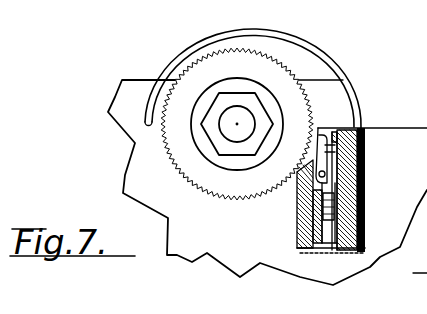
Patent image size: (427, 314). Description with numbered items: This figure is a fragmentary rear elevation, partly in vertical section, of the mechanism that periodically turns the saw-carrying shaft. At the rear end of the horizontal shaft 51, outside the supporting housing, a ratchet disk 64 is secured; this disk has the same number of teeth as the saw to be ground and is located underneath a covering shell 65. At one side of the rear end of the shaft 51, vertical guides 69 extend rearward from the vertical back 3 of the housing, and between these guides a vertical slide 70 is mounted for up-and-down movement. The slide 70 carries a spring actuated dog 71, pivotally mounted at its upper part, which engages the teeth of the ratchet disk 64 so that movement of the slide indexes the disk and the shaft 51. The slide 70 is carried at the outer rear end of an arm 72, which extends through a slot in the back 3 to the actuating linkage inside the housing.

The back 3 is at (132, 172).
The horizontal shaft 51 is at (237, 112).
The ratchet disk 64 is at (192, 168).
The covering shell 65 is at (306, 58).
The vertical guides 69 is at (302, 250).
The vertical slide 70 is at (366, 179).
The spring actuated dog 71 is at (366, 144).
The arm 72 is at (364, 207).